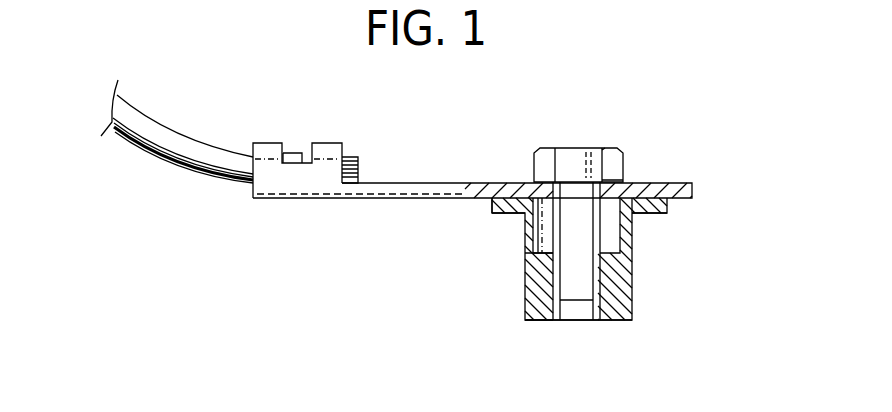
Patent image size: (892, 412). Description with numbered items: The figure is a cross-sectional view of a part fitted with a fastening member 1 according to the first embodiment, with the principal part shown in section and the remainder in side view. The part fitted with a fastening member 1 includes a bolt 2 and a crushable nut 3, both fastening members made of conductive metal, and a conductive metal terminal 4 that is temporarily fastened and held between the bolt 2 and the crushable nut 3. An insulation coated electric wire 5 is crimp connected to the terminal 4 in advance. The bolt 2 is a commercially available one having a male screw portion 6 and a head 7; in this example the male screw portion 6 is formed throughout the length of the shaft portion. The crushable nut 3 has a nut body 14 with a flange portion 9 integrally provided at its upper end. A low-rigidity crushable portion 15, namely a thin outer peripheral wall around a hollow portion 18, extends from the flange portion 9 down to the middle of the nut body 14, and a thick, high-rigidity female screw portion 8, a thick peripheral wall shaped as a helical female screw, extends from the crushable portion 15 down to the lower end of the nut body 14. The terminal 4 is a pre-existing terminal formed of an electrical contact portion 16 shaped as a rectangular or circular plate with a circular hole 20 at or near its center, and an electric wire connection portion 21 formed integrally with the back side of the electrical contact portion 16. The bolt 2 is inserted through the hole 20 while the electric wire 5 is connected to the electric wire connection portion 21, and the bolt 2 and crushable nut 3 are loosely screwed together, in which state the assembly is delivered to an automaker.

The part fitted with a fastening member 1 is at (733, 78).
The bolt 2 is at (622, 146).
The crushable nut 3 is at (634, 272).
The terminal 4 is at (437, 183).
The insulation coated electric wire 5 is at (173, 133).
The male screw portion 6 is at (580, 280).
The head 7 is at (614, 170).
The female screw portion 8 is at (552, 286).
The flange portion 9 is at (491, 213).
The nut body 14 is at (634, 307).
The crushable portion 15 is at (536, 226).
The electrical contact portion 16 is at (675, 198).
The hollow portion 18 is at (537, 240).
The hole 20 is at (557, 192).
The electric wire connection portion 21 is at (329, 143).